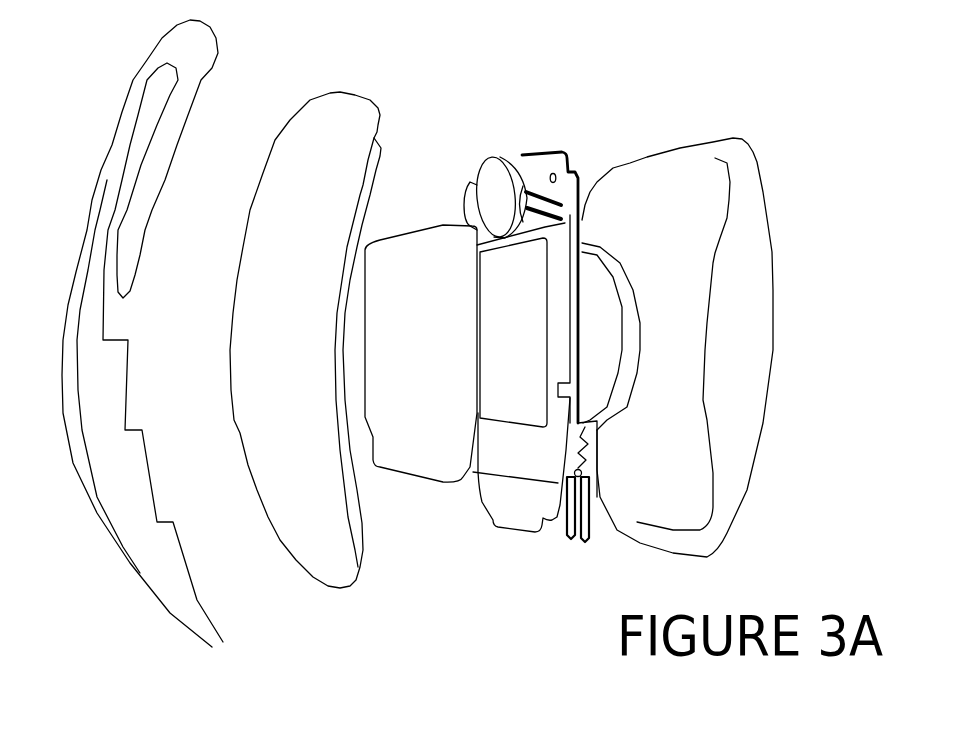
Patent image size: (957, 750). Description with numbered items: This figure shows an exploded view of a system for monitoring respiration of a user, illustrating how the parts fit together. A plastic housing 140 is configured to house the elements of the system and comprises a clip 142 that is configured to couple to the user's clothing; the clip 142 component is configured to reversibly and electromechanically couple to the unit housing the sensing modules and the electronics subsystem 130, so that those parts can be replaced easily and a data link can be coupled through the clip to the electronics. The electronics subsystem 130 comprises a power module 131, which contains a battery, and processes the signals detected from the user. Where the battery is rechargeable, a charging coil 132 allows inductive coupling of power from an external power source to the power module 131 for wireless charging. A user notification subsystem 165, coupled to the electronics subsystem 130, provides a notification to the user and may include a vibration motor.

The clip 142 is at (127, 520).
The housing 140 is at (333, 572).
The power module 131 is at (421, 353).
The electronics subsystem 130 is at (590, 547).
The user notification subsystem 165 is at (501, 182).
The charging coil 132 is at (598, 325).